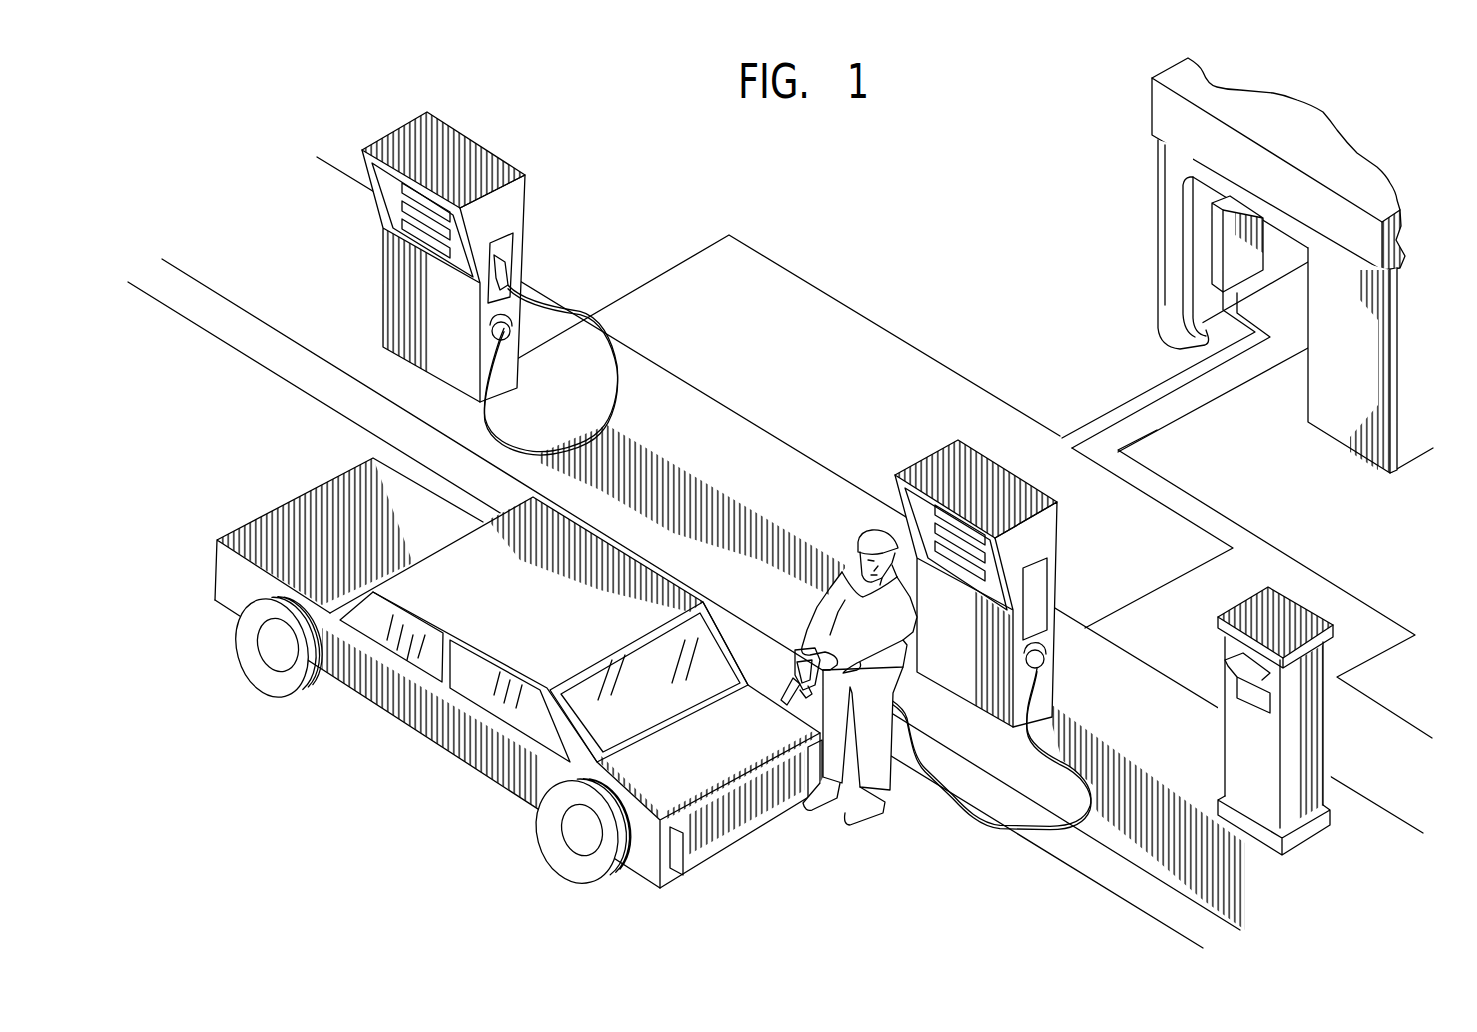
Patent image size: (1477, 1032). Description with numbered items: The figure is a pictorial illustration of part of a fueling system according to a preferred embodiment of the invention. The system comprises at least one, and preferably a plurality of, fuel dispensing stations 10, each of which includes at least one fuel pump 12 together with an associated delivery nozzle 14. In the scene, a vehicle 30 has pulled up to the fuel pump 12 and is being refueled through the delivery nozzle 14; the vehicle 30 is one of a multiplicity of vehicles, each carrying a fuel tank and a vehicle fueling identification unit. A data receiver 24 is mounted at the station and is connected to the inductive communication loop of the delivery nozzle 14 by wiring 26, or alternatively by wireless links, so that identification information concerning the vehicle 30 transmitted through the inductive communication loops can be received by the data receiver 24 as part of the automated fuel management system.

The fuel dispensing station 10 is at (1360, 111).
The fuel pump 12 is at (985, 447).
The delivery nozzle 14 is at (797, 643).
The data receiver 24 is at (1230, 237).
The wiring 26 is at (1117, 407).
The vehicle 30 is at (497, 790).